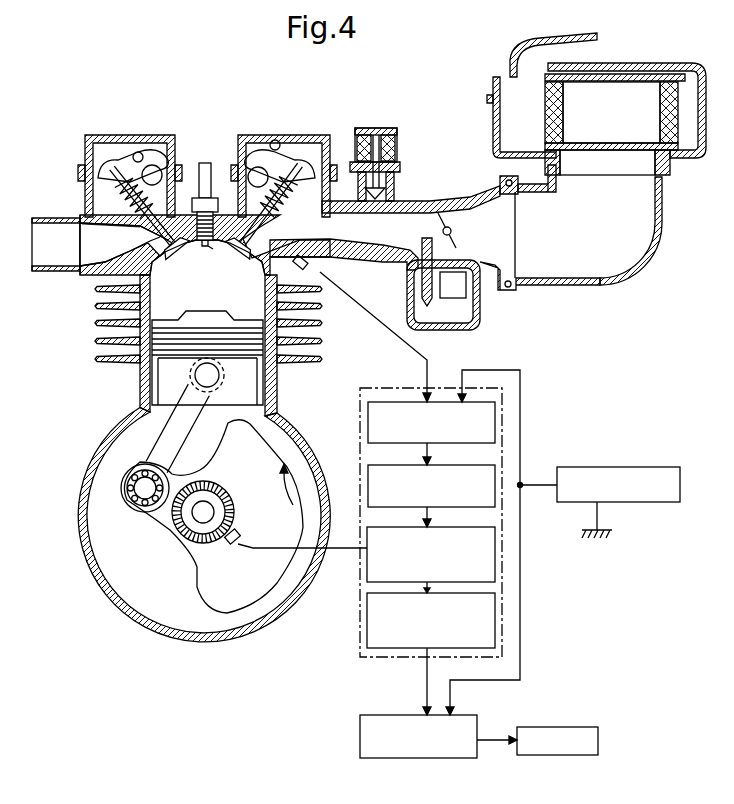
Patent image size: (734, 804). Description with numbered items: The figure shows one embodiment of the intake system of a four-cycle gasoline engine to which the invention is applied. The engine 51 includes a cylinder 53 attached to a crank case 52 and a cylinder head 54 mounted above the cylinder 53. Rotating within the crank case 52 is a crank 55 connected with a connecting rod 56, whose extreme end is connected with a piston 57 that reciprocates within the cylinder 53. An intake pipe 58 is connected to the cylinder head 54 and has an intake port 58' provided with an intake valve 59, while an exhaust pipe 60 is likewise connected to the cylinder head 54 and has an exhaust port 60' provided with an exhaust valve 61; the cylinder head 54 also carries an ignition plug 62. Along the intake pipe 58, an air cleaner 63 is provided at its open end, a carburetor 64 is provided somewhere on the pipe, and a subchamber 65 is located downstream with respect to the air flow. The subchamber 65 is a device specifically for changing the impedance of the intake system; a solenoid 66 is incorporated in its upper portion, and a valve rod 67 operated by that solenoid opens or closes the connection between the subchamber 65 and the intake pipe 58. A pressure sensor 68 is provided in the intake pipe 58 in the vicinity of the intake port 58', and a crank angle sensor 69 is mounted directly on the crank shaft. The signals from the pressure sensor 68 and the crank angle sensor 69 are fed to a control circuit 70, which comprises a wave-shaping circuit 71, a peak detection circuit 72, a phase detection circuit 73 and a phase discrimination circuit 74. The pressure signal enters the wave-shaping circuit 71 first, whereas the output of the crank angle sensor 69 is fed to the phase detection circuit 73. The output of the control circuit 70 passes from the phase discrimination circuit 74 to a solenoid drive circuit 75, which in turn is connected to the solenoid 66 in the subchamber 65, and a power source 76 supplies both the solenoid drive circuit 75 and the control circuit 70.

The engine 51 is at (88, 311).
The crank case 52 is at (103, 547).
The cylinder 53 is at (105, 320).
The cylinder head 54 is at (173, 186).
The crank 55 is at (267, 448).
The connecting rod 56 is at (183, 428).
The piston 57 is at (242, 330).
The intake pipe 58 is at (466, 227).
The intake port 58' is at (248, 220).
The intake valve 59 is at (222, 262).
The exhaust pipe 60 is at (56, 219).
The exhaust port 60' is at (132, 268).
The exhaust valve 61 is at (177, 246).
The ignition plug 62 is at (207, 175).
The air cleaner 63 is at (630, 93).
The carburetor 64 is at (470, 303).
The subchamber 65 is at (393, 177).
The solenoid 66 is at (385, 128).
The valve rod 67 is at (365, 200).
The pressure sensor 68 is at (296, 257).
The crank angle sensor 69 is at (227, 492).
The control circuit 70 is at (358, 622).
The wave-shaping circuit 71 is at (412, 404).
The peak detection circuit 72 is at (483, 467).
The phase detection circuit 73 is at (483, 552).
The phase discrimination circuit 74 is at (483, 637).
The solenoid drive circuit 75 is at (360, 740).
The power source 76 is at (595, 467).